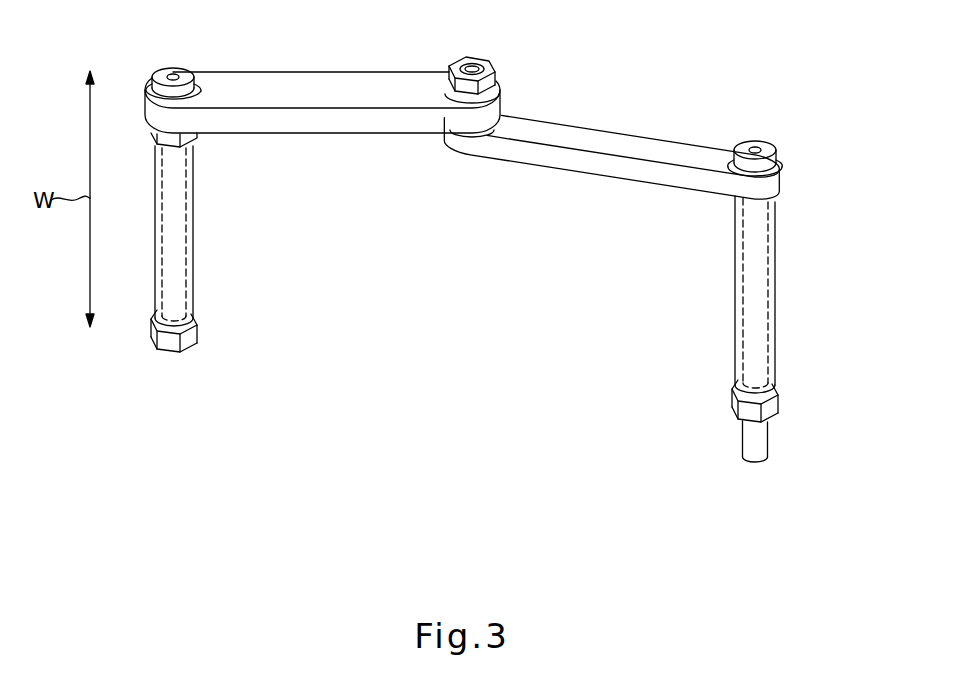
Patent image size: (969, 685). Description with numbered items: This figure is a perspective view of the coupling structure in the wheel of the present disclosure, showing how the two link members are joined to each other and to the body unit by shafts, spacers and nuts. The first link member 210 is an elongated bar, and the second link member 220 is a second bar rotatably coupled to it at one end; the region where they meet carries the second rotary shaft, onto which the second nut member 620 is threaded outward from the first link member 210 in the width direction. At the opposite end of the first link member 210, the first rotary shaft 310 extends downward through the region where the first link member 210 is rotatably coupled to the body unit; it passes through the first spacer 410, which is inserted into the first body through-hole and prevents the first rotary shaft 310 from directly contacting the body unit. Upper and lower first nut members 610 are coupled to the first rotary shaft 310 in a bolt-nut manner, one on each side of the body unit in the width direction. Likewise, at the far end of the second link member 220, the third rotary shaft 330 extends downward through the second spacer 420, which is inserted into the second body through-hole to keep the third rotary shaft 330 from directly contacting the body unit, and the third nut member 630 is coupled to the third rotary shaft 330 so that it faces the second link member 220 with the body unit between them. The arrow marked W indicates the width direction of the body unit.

The first link member 210 is at (311, 85).
The second link member 220 is at (623, 147).
The first rotary shaft 310 is at (188, 268).
The third rotary shaft 330 is at (769, 341).
The first spacer 410 is at (196, 207).
The second spacer 420 is at (776, 283).
The first nut members 610 is at (192, 137).
The second nut member 620 is at (471, 72).
The third nut member 630 is at (778, 410).